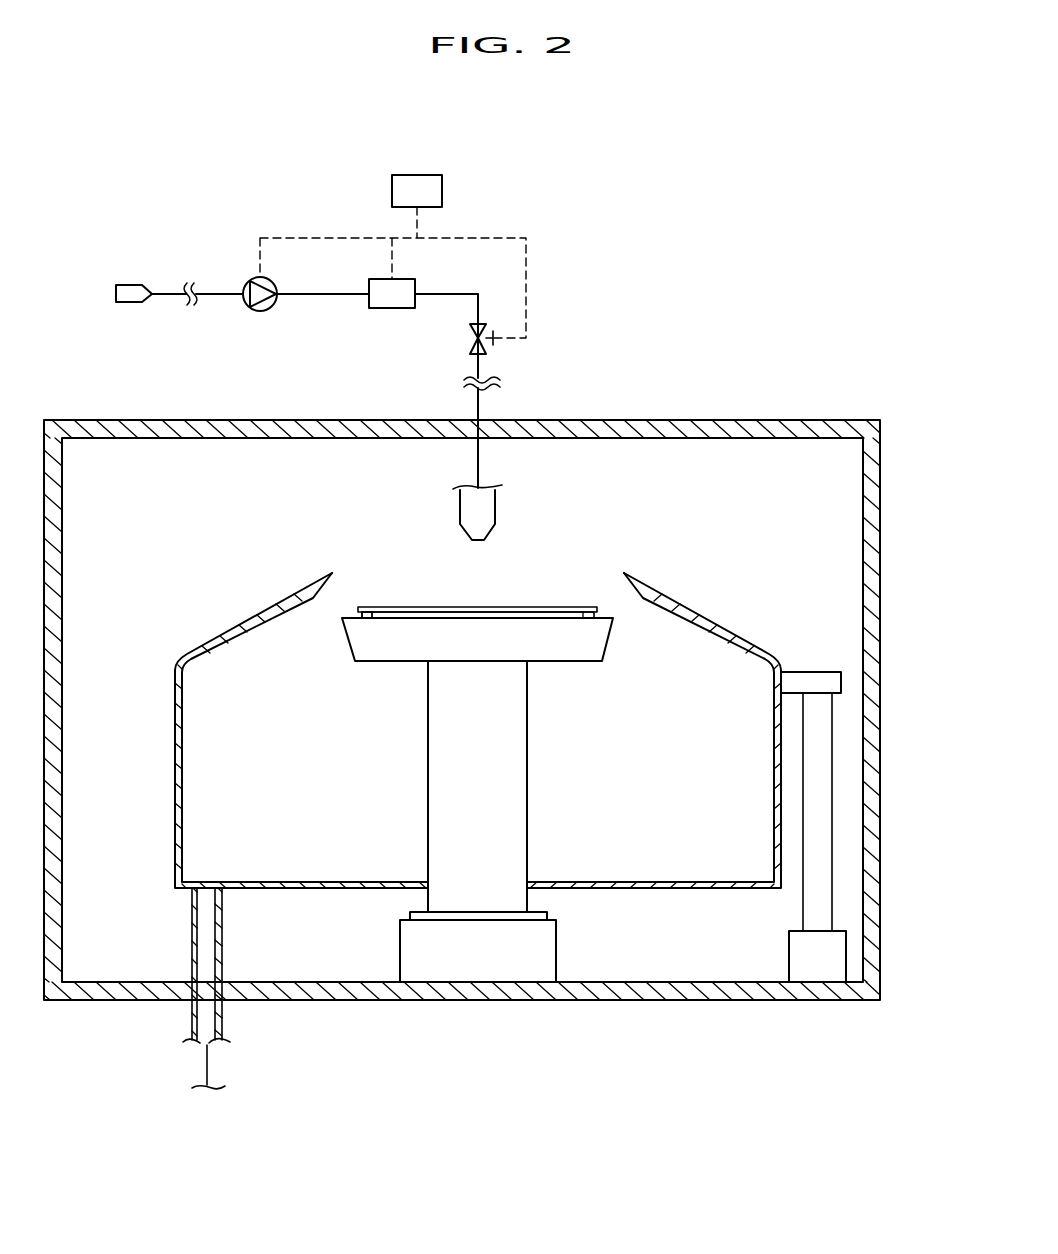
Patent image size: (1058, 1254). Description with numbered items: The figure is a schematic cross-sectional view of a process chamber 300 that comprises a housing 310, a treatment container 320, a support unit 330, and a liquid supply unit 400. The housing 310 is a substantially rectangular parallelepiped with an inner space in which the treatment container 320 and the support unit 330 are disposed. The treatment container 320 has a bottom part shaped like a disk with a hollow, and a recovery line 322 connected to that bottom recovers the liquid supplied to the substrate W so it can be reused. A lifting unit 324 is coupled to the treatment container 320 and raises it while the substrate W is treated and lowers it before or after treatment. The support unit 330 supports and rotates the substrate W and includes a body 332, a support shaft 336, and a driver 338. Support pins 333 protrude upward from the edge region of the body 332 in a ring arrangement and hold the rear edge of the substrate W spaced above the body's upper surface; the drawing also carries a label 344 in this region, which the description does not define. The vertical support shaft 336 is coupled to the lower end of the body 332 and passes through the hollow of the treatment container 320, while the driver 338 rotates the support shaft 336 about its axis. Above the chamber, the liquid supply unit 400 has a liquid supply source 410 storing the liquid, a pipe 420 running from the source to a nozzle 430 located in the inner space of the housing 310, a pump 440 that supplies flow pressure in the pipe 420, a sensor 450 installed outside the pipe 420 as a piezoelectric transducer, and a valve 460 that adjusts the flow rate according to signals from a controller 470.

The process chamber 300 is at (618, 179).
The housing 310 is at (677, 428).
The treatment container 320 is at (704, 603).
The recovery line 322 is at (223, 1020).
The lifting unit 324 is at (838, 788).
The support unit 330 is at (482, 760).
The body 332 is at (353, 642).
The support pin 333 is at (380, 616).
The chuck pins 344 is at (358, 612).
The support shaft 336 is at (513, 778).
The driver 338 is at (545, 946).
The substrate W is at (521, 605).
The liquid supply unit 400 is at (291, 218).
The liquid supply source 410 is at (128, 283).
The pipe 420 is at (330, 296).
The nozzle 430 is at (490, 507).
The pump 440 is at (258, 312).
The sensor 450 is at (390, 310).
The valve 460 is at (500, 341).
The controller 470 is at (442, 190).